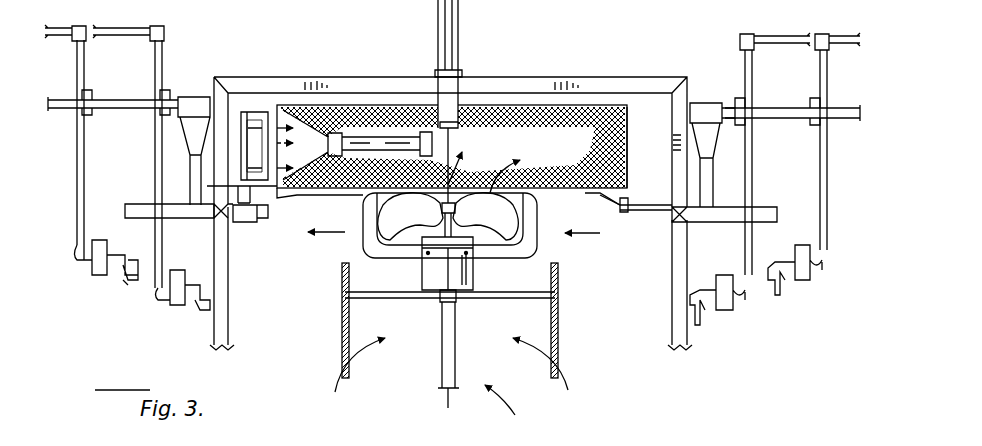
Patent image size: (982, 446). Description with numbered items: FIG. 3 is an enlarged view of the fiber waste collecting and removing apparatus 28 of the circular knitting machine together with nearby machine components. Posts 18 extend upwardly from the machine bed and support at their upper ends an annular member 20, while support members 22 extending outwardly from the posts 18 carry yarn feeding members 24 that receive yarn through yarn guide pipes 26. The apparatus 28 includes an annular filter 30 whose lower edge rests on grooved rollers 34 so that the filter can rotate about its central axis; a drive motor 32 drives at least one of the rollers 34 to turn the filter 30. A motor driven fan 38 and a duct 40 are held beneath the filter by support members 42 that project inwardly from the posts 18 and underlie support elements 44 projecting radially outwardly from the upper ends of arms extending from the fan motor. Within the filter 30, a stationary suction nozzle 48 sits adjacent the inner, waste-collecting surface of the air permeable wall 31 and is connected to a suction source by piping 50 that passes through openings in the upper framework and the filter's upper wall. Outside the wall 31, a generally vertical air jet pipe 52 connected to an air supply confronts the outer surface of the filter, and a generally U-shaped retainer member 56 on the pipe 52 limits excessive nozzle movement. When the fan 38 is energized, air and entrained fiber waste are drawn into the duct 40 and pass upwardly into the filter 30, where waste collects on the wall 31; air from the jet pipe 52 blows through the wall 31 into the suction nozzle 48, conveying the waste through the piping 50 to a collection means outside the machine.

The posts 18 is at (210, 333).
The annular member 20 is at (618, 77).
The support members 22 is at (185, 218).
The yarn feeding members 24 is at (165, 305).
The yarn guide pipes 26 is at (157, 173).
The fiber waste collecting and removing apparatus 28 is at (454, 334).
The annular filter 30 is at (525, 105).
The air permeable wall 31 is at (630, 151).
The drive motor 32 is at (257, 222).
The grooved rollers 34 is at (281, 216).
The motor driven fan 38 is at (487, 250).
The duct 40 is at (558, 308).
The support members 42 is at (653, 210).
The support elements 44 is at (568, 190).
The suction nozzle 48 is at (320, 103).
The piping 50 is at (458, 24).
The air jet pipe 52 is at (241, 110).
The retainer member 56 is at (257, 108).